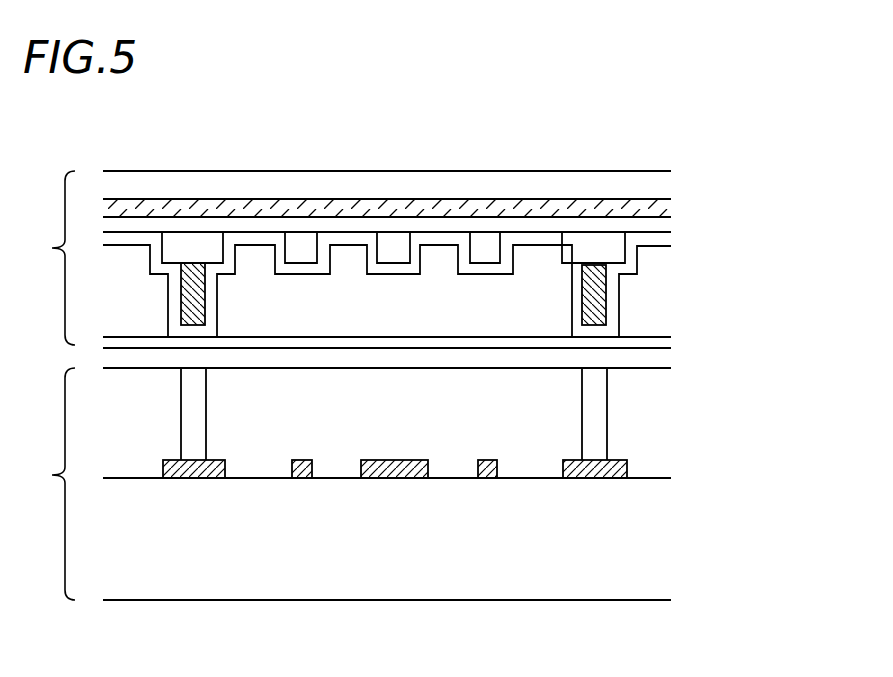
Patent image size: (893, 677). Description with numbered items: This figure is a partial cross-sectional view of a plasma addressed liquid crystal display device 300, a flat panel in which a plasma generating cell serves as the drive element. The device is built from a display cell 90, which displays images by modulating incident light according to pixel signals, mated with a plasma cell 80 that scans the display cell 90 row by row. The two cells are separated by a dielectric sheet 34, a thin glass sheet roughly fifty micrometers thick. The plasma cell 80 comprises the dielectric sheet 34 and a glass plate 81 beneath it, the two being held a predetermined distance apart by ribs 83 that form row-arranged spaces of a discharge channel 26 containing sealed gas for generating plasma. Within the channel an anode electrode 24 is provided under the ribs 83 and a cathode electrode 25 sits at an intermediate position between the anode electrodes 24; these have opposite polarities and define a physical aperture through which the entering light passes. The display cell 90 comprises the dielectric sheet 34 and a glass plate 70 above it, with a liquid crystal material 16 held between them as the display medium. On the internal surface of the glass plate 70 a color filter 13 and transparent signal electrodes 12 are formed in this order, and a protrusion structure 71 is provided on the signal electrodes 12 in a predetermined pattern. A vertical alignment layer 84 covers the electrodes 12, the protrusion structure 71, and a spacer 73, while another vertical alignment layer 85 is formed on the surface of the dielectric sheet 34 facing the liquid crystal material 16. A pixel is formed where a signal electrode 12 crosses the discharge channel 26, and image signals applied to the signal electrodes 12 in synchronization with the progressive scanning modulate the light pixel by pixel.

The signal electrode 12 is at (645, 227).
The color filter 13 is at (614, 225).
The liquid crystal material 16 is at (405, 323).
The anode electrode 24 is at (197, 467).
The cathode electrode 25 is at (302, 478).
The discharge channel 26 is at (453, 442).
The dielectric sheet 34 is at (660, 360).
The glass plate 70 is at (488, 183).
The protrusion structure 71 is at (393, 240).
The spacer 73 is at (600, 297).
The plasma cell 80 is at (44, 484).
The glass plate 81 is at (588, 572).
The rib 83 is at (607, 428).
The vertical alignment layer 84 is at (130, 240).
The vertical alignment layer 85 is at (660, 343).
The display cell 90 is at (43, 258).
The plasma addressed liquid crystal display device 300 is at (754, 214).